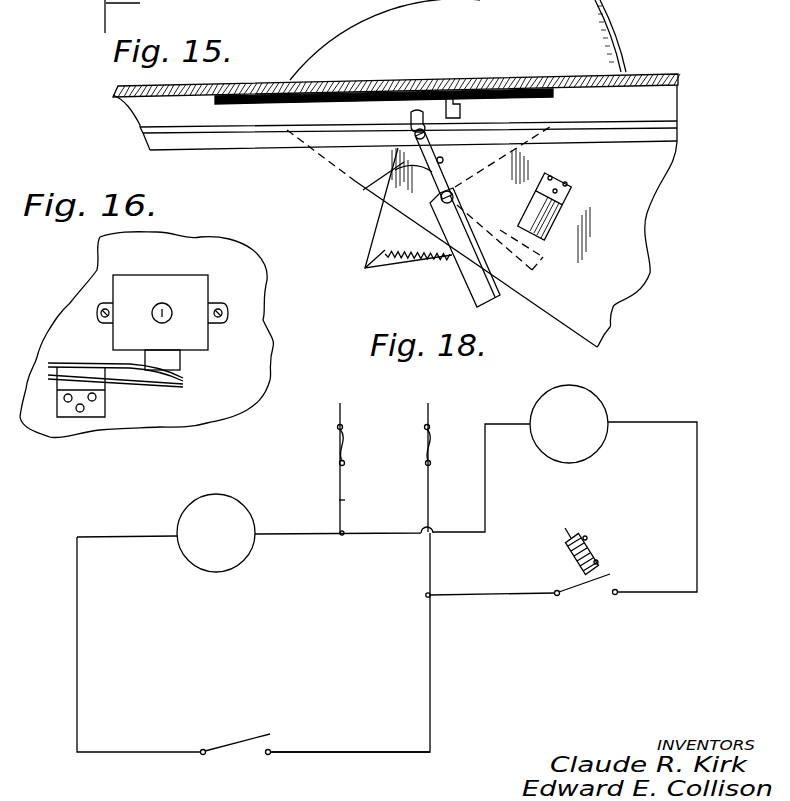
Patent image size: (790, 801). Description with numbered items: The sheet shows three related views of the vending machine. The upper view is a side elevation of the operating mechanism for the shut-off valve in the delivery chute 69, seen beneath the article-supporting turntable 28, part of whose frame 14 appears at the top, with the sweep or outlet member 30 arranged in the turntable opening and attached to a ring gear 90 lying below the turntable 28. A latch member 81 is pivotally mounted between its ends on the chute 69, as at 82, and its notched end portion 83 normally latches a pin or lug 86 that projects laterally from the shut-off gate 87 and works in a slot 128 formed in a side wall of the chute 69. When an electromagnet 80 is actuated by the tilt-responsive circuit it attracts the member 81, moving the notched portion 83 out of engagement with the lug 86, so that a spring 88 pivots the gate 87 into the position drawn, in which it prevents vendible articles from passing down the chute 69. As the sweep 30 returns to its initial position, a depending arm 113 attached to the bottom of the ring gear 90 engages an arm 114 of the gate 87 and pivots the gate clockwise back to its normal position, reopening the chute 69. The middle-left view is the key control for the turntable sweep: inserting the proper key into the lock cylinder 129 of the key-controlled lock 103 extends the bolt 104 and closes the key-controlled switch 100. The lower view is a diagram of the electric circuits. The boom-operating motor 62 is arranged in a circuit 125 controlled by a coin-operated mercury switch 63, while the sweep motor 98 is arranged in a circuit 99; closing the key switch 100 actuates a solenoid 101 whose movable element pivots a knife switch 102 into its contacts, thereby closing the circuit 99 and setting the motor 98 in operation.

In FIG. 15, the frame member 14 is at (141, 16).
In FIG. 15, the turntable 28 is at (660, 74).
In FIG. 15, the sweep 30 is at (594, 32).
In FIG. 15, the delivery chute 69 is at (572, 315).
In FIG. 15, the electromagnet 80 is at (560, 212).
In FIG. 15, the latch member 81 is at (468, 265).
In FIG. 15, the pivot 82 is at (472, 183).
In FIG. 15, the notched end portion 83 is at (425, 137).
In FIG. 15, the pin or lug 86 is at (443, 159).
In FIG. 15, the shut-off gate 87 is at (385, 258).
In FIG. 15, the spring 88 is at (417, 260).
In FIG. 15, the ring gear 90 is at (553, 95).
In FIG. 15, the depending arm 113 is at (545, 43).
In FIG. 15, the arm 114 is at (413, 110).
In FIG. 15, the slot 128 is at (418, 165).
In FIG. 16, the key-controlled switch 100 is at (145, 383).
In FIG. 16, the key-controlled lock 103 is at (199, 289).
In FIG. 16, the bolt 104 is at (181, 365).
In FIG. 16, the lock cylinder 129 is at (168, 303).
In FIG. 18, the motor 62 is at (229, 495).
In FIG. 18, the mercury switch 63 is at (242, 748).
In FIG. 18, the motor 98 is at (589, 392).
In FIG. 18, the electric circuit 99 is at (697, 478).
In FIG. 18, the solenoid 101 is at (588, 553).
In FIG. 18, the knife switch 102 is at (583, 586).
In FIG. 18, the electric circuit 125 is at (362, 753).